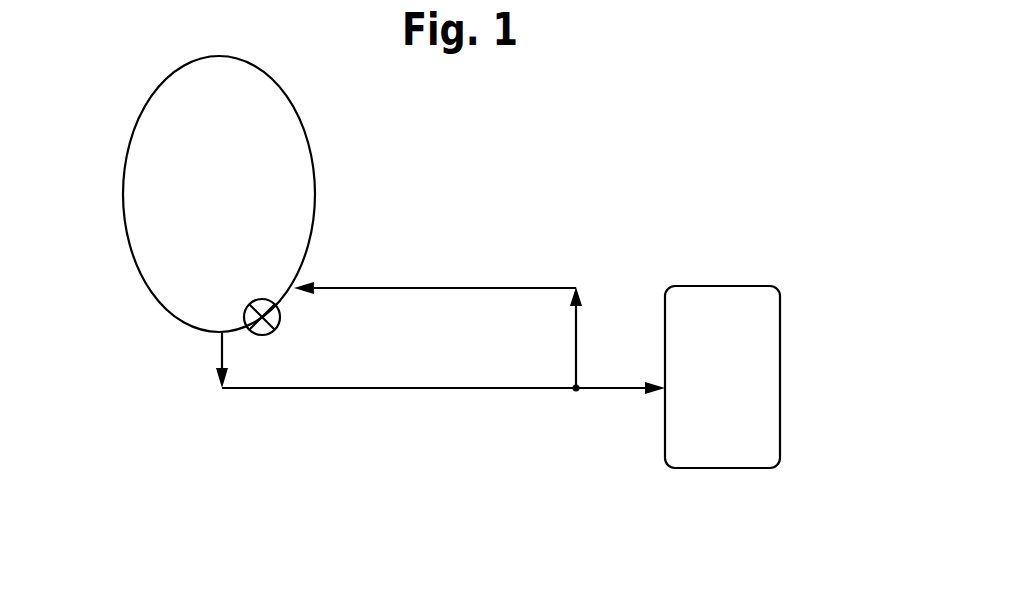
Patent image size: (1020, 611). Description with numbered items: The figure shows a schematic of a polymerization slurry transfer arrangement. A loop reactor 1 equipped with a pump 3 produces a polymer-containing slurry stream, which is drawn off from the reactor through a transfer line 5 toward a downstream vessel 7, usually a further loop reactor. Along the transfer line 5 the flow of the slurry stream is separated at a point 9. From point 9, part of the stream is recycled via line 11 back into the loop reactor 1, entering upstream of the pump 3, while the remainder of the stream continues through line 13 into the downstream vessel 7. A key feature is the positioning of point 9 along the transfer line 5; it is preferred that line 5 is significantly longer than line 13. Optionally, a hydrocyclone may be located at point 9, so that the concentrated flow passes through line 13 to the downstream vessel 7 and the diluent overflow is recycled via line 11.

The loop reactor 1 is at (143, 116).
The pump 3 is at (264, 336).
The transfer line 5 is at (380, 390).
The downstream vessel 7 is at (780, 364).
The separation point 9 is at (574, 390).
The recycle line 11 is at (458, 288).
The line to downstream vessel 13 is at (608, 390).